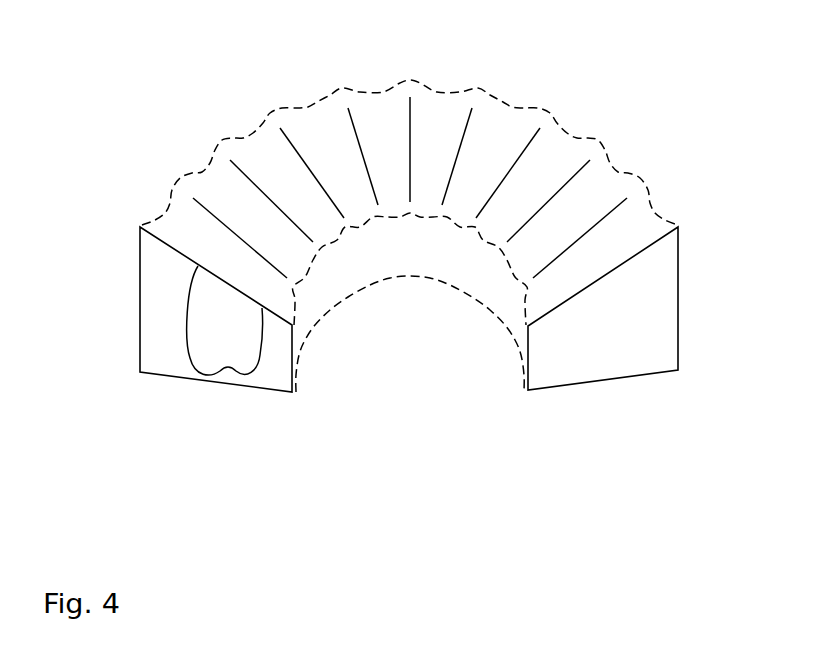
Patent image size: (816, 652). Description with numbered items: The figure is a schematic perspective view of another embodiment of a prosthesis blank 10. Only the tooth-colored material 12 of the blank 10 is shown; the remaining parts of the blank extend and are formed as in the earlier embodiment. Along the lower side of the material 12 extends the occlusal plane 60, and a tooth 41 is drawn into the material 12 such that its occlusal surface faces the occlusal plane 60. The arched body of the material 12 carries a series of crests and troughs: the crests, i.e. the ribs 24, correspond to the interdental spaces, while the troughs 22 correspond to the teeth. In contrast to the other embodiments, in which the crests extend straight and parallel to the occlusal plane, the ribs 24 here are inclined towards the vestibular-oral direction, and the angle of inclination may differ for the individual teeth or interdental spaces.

The blank 10 is at (366, 432).
The tooth-colored material 12 is at (663, 295).
The troughs 22 is at (435, 104).
The ribs 24 is at (463, 128).
The tooth 41 is at (212, 333).
The occlusal plane 60 is at (215, 397).